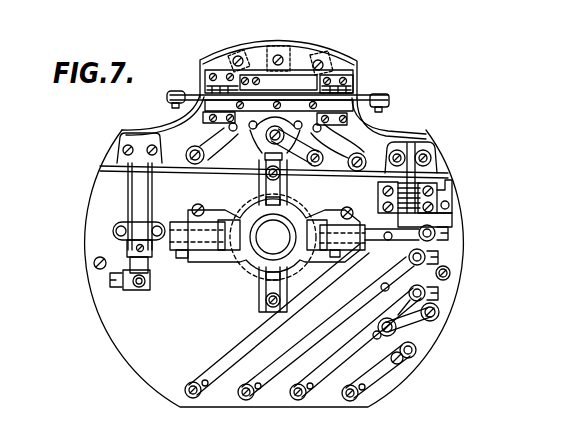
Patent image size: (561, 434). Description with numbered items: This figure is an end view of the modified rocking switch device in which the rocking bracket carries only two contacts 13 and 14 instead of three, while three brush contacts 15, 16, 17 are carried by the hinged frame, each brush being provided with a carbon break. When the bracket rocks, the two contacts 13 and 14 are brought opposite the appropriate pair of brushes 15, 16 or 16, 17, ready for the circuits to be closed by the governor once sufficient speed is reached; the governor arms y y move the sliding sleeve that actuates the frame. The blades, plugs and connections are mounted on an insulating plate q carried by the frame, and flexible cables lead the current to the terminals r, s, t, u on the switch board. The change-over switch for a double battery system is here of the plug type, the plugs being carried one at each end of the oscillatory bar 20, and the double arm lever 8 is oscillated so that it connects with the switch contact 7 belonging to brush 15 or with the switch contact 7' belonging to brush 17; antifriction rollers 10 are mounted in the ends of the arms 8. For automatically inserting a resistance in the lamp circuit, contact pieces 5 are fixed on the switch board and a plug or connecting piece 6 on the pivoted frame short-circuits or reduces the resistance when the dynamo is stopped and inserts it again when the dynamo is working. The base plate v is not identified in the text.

The contact pieces 5 is at (425, 187).
The plug or connecting piece 6 is at (437, 147).
The switch contact 7 is at (264, 77).
The switch contact 7' is at (352, 82).
The double arm lever of change-over switch 8 is at (382, 96).
The antifriction rollers 10 is at (388, 105).
The contact 13 is at (238, 52).
The contact 14 is at (283, 50).
The brush contact 15 is at (224, 58).
The brush contact 16 is at (270, 46).
The brush contact 17 is at (330, 58).
The oscillatory bar 20 is at (330, 84).
The insulating plate q is at (218, 168).
The governor arms y is at (258, 185).
The base plate v is at (274, 223).
The terminal r is at (199, 397).
The terminal s is at (249, 399).
The terminal t is at (300, 399).
The terminal u is at (350, 400).